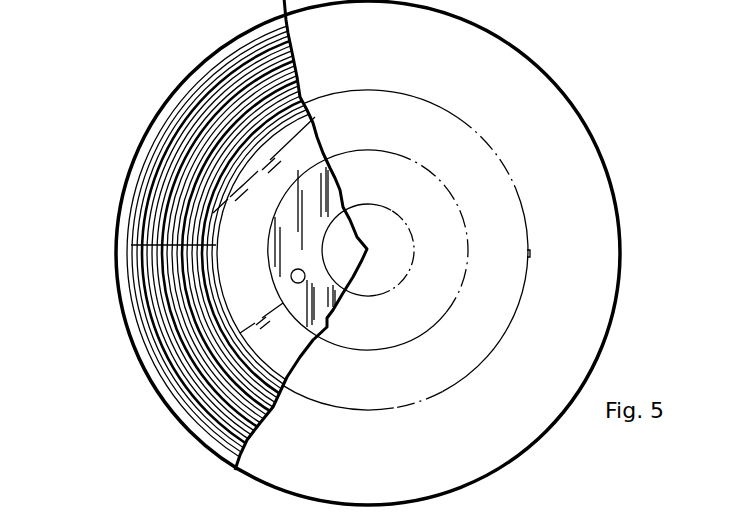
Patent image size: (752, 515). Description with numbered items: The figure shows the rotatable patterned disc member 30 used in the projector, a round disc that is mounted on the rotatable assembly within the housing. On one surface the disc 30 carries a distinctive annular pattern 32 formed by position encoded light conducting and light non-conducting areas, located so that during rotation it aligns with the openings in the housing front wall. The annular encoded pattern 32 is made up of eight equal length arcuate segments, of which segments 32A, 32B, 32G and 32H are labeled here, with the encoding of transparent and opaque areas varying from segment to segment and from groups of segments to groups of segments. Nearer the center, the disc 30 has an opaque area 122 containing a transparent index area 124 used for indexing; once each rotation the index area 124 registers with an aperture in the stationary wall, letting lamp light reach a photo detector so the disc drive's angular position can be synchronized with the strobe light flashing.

The patterned disc member 30 is at (160, 95).
The annular pattern 32 is at (163, 377).
The arcuate segment 32A is at (180, 313).
The arcuate segment 32B is at (233, 418).
The arcuate segment 32G is at (253, 83).
The arcuate segment 32H is at (190, 170).
The opaque area 122 is at (318, 181).
The transparent index area 124 is at (305, 274).